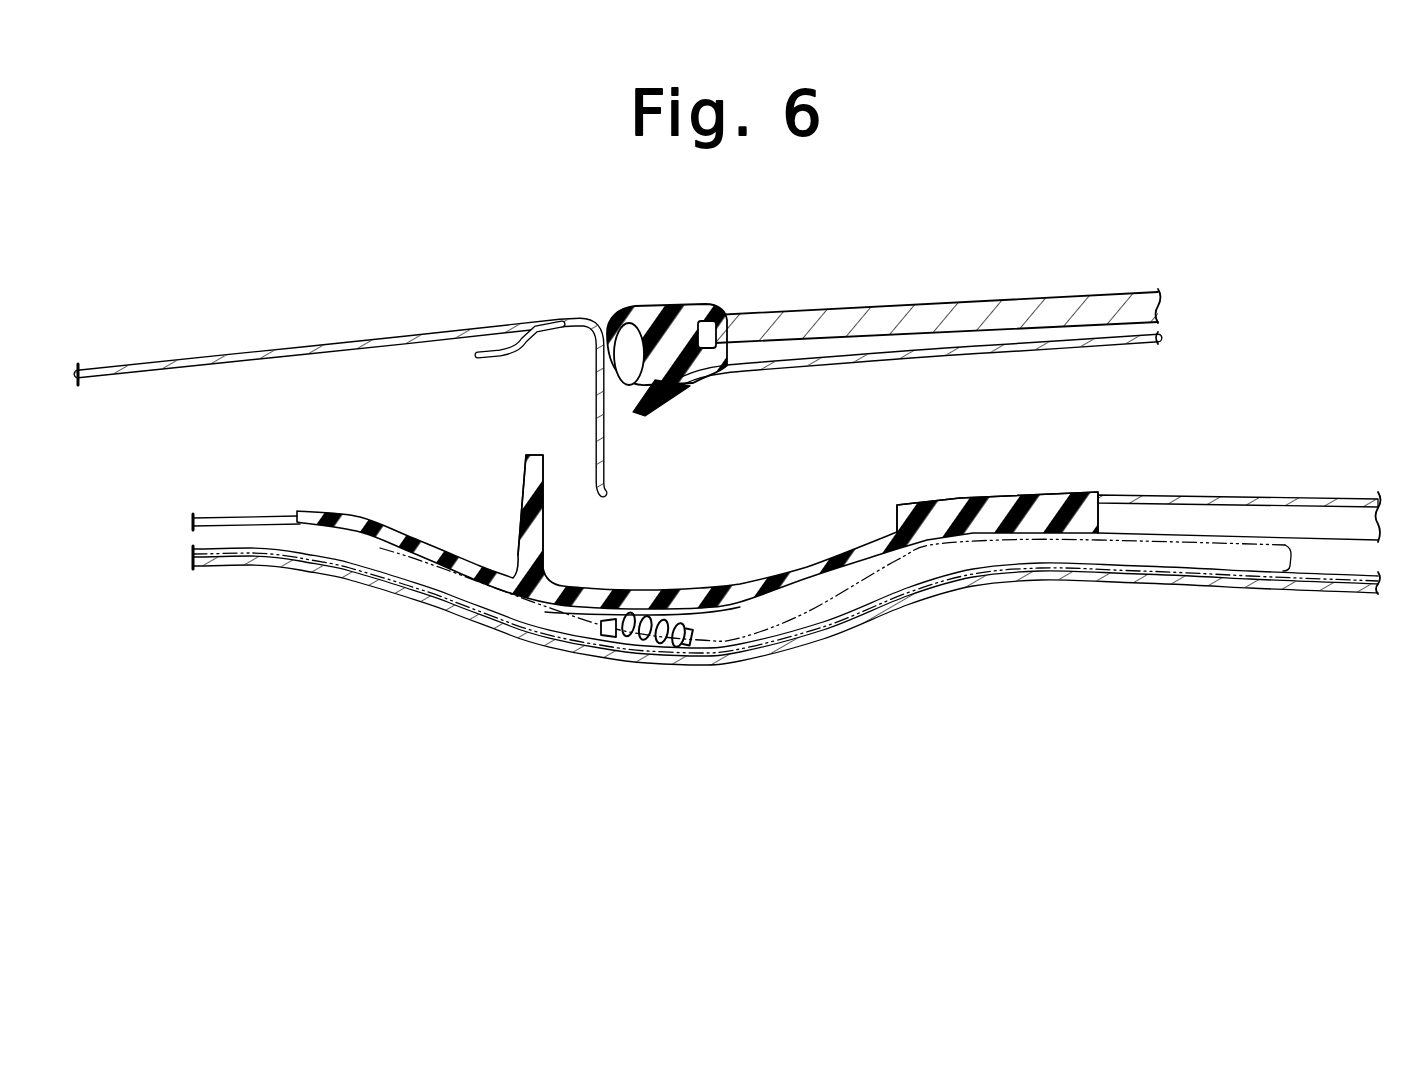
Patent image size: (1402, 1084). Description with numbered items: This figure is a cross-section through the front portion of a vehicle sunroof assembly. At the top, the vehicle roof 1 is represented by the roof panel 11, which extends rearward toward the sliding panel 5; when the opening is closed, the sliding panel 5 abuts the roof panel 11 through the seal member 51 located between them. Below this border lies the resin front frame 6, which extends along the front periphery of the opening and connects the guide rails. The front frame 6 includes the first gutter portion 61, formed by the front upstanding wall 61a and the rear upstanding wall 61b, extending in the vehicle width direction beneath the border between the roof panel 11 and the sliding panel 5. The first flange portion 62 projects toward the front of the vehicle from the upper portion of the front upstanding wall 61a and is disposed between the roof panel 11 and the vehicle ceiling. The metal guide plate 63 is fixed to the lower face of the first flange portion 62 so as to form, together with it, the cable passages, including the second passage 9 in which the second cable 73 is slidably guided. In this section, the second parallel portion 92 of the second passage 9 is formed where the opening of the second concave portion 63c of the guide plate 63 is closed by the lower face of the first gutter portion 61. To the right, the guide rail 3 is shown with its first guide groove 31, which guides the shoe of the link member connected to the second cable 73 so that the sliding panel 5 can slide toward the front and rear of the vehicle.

The vehicle roof 1 is at (252, 346).
The roof panel 11 is at (354, 340).
The sliding panel 5 is at (880, 314).
The seal member 51 is at (677, 305).
The front frame 6 is at (1045, 488).
The first gutter portion 61 is at (573, 598).
The front upstanding wall 61a is at (532, 517).
The rear upstanding wall 61b is at (932, 505).
The first flange portion 62 is at (372, 541).
The guide plate 63 is at (737, 655).
The second concave portion 63c is at (922, 580).
The guide rail 3 is at (1222, 488).
The first guide groove 31 is at (1322, 584).
The second passage 9 is at (445, 626).
The second parallel portion 92 is at (498, 642).
The second cable 73 is at (665, 645).